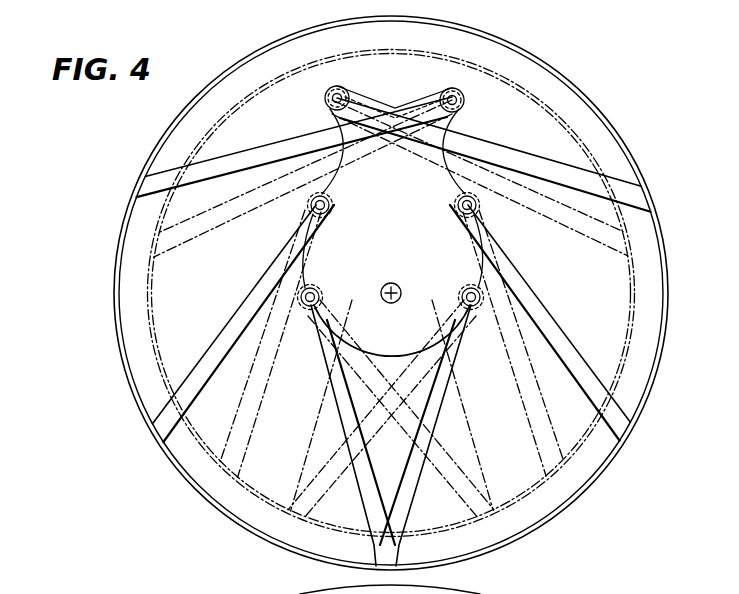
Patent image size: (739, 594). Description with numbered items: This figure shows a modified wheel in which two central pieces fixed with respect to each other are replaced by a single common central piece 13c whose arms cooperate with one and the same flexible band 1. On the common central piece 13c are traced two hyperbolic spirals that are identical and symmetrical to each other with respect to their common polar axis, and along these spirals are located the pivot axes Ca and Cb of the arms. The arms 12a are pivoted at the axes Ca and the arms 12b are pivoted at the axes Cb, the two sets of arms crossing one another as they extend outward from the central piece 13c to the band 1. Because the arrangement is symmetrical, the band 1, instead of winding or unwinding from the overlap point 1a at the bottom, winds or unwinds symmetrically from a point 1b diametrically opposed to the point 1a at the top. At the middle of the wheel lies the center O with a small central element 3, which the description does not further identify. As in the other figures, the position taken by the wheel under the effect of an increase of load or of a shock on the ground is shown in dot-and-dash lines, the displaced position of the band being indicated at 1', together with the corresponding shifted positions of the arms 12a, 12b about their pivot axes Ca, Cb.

The band 1 is at (391, 294).
The inner rim position (alternate) 1' is at (413, 293).
The overlap point 1a is at (339, 569).
The winding point 1b is at (403, 17).
The hub 3 is at (401, 293).
The wheel center O is at (392, 290).
The arm 12a is at (254, 158).
The arm 12b is at (537, 166).
The common central piece 13c is at (426, 166).
The pivot axis Ca is at (458, 96).
The pivot axis Cb is at (327, 100).